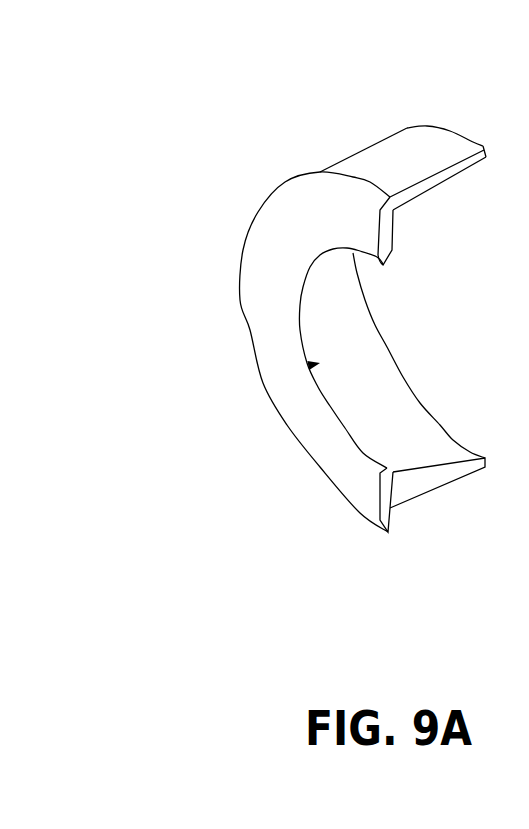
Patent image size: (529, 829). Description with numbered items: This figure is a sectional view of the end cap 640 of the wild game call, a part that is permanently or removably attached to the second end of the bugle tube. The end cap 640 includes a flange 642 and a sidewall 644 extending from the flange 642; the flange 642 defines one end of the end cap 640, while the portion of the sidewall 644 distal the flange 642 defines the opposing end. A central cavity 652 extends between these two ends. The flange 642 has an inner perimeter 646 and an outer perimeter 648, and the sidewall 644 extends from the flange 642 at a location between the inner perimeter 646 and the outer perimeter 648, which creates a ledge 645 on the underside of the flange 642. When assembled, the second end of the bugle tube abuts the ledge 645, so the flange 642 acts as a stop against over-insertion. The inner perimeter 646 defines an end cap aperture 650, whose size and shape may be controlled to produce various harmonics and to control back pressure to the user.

The end cap 640 is at (297, 277).
The flange 642 is at (311, 326).
The sidewall 644 is at (424, 152).
The ledge 645 is at (383, 193).
The inner perimeter 646 is at (330, 403).
The outer perimeter 648 is at (252, 345).
The end cap aperture 650 is at (309, 366).
The central cavity 652 is at (393, 413).